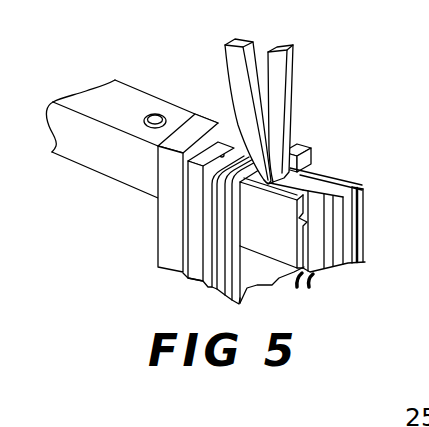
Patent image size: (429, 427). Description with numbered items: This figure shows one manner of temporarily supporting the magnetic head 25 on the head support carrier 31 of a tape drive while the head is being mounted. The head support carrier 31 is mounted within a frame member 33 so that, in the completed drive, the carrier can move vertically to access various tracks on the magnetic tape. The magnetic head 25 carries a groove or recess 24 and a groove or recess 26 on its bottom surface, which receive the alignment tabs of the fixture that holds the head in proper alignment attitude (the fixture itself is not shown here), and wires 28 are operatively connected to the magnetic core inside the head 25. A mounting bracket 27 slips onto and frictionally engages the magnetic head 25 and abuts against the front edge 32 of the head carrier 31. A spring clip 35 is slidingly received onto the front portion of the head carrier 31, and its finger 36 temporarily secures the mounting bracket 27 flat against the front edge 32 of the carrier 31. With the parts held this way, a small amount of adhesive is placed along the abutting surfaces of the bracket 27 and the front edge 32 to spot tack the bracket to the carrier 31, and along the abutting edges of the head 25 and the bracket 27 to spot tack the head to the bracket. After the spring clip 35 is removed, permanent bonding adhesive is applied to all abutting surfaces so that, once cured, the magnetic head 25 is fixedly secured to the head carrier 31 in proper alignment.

The groove or recess 24 is at (357, 265).
The magnetic head 25 is at (365, 240).
The groove or recess 26 is at (340, 183).
The mounting bracket 27 is at (264, 243).
The wires 28 is at (296, 286).
The head support carrier 31 is at (172, 96).
The front edge 32 is at (243, 293).
The frame member 33 is at (158, 236).
The spring clip 35 is at (300, 96).
The finger 36 is at (290, 146).